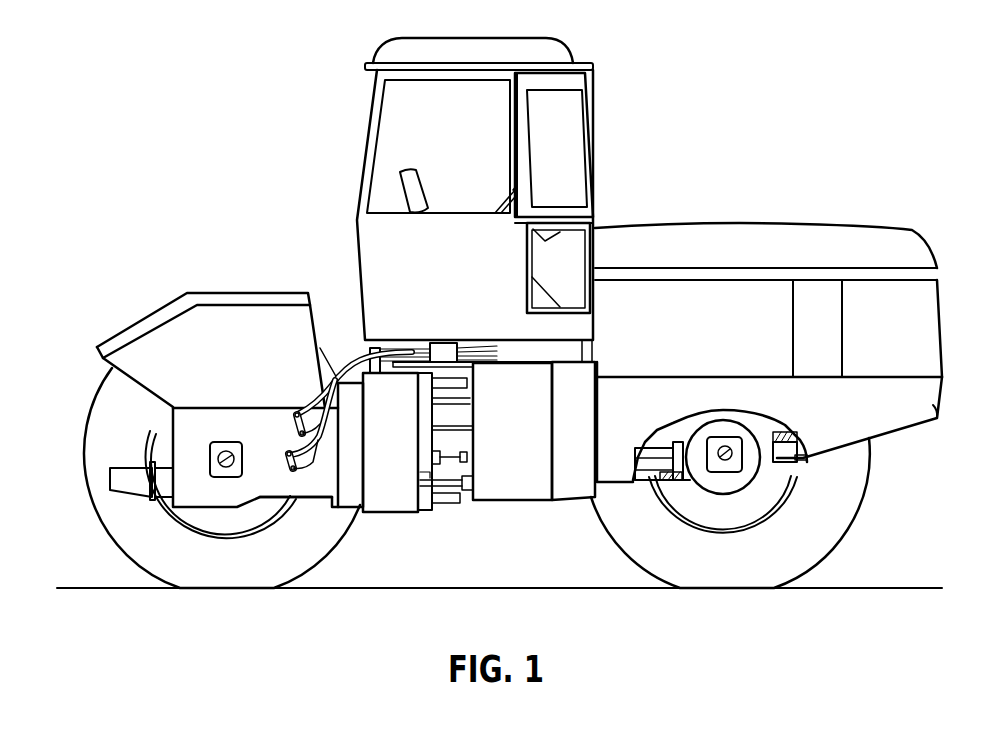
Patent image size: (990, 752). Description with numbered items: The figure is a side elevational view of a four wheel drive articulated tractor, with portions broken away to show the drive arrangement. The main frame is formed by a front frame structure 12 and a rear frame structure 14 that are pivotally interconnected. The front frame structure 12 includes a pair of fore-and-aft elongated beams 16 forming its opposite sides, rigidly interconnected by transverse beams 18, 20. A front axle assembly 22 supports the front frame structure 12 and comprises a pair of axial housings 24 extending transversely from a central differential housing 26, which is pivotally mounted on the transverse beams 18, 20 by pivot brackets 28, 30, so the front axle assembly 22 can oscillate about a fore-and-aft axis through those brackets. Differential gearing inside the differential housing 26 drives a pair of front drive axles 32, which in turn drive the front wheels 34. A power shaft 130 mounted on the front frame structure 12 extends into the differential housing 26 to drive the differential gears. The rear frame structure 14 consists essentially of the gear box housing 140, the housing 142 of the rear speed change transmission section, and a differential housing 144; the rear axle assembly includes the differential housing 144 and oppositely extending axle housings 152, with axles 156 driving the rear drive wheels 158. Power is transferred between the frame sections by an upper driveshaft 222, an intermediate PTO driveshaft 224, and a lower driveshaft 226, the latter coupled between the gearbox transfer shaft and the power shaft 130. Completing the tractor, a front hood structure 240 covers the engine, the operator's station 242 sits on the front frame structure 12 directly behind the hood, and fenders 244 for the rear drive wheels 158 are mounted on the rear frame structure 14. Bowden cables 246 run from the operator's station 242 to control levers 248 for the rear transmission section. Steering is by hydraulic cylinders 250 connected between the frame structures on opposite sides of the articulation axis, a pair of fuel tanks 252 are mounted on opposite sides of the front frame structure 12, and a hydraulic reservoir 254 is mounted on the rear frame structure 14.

The front frame structure 12 is at (883, 434).
The rear frame structure 14 is at (308, 500).
The fore-and-aft elongated beams 16 is at (933, 408).
The transverse beam 18 is at (788, 438).
The transverse beam 20 is at (663, 485).
The front axle assembly 22 is at (693, 503).
The axial housings 24 is at (738, 468).
The central differential housing 26 is at (723, 484).
The pivot bracket 28 is at (798, 450).
The pivot bracket 30 is at (677, 427).
The front drive axles 32 is at (725, 446).
The front wheels 34 is at (850, 512).
The power shaft 130 is at (645, 445).
The gear box housing 140 is at (348, 503).
The rear speed change transmission section housing 142 is at (282, 412).
The differential housing 144 is at (195, 418).
The axle housings 152 is at (218, 473).
The axles 156 is at (228, 450).
The rear drive wheels 158 is at (120, 535).
The upper driveshaft 222 is at (460, 402).
The intermediate PTO driveshaft 224 is at (462, 430).
The lower driveshaft 226 is at (462, 457).
The front hood structure 240 is at (783, 230).
The operator's station 242 is at (572, 179).
The fenders 244 is at (253, 312).
The Bowden cables 246 is at (352, 363).
The control levers 248 is at (306, 464).
The hydraulic cylinders 250 is at (468, 483).
The fuel tanks 252 is at (495, 389).
The hydraulic reservoir 254 is at (374, 407).